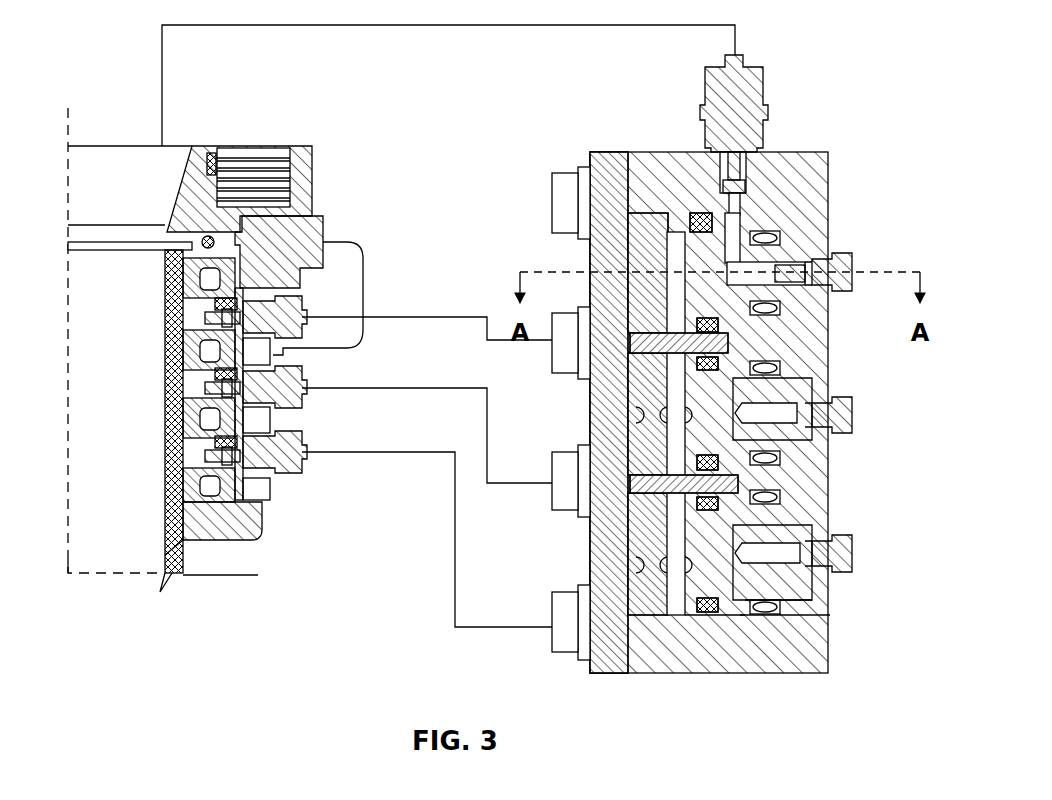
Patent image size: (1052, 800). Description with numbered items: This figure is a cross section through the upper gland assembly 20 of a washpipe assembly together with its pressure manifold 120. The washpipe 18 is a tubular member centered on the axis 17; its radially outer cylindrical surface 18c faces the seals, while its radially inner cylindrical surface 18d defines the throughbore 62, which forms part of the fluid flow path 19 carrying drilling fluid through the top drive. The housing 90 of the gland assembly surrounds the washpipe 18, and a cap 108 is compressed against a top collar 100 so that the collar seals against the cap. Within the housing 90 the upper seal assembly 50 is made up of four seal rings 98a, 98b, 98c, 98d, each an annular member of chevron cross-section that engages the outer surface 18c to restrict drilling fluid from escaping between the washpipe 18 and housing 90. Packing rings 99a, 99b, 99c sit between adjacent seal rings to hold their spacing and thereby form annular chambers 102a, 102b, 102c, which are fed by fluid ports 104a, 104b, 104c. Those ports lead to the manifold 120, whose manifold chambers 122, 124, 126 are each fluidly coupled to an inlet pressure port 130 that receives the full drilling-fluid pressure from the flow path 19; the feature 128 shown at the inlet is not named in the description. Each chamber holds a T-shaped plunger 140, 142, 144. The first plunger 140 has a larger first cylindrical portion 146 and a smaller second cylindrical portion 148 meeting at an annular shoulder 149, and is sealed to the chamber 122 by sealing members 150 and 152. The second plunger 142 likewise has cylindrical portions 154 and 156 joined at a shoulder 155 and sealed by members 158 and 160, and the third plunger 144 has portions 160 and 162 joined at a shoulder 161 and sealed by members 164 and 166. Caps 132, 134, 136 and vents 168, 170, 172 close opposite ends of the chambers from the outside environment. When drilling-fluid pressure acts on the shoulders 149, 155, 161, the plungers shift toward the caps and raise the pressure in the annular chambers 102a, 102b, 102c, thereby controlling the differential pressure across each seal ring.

The axis 17 is at (68, 410).
The washpipe 18 is at (100, 246).
The radially outer cylindrical surface 18c is at (185, 567).
The radially inner cylindrical surface 18d is at (166, 556).
The fluid flow path 19 is at (84, 186).
The upper gland assembly 20 is at (292, 492).
The upper seal assembly 50 is at (237, 494).
The throughbore 62 is at (88, 513).
The housing 90 is at (313, 160).
The first seal ring 98a is at (190, 283).
The second seal ring 98b is at (190, 352).
The third seal ring 98c is at (190, 420).
The fourth seal ring 98d is at (190, 490).
The first packing ring 99a is at (222, 302).
The second packing ring 99b is at (222, 372).
The third packing ring 99c is at (222, 441).
The top collar 100 is at (275, 235).
The first annular chamber 102a is at (218, 318).
The second annular chamber 102b is at (218, 388).
The third annular chamber 102c is at (218, 456).
The first fluid port 104a is at (303, 337).
The second fluid port 104b is at (300, 400).
The third fluid port 104c is at (303, 466).
The cap 108 is at (210, 158).
The pressure manifold 120 is at (830, 172).
The first chamber 122 is at (742, 223).
The second chamber 124 is at (668, 381).
The third chamber 126 is at (673, 564).
The bore 128 is at (720, 186).
The inlet pressure port 130 is at (768, 93).
The cap 132 is at (642, 248).
The cap 134 is at (647, 450).
The cap 136 is at (608, 561).
The first plunger 140 is at (663, 246).
The second plunger 142 is at (807, 389).
The third plunger 144 is at (807, 533).
The first cylindrical portion 146 is at (612, 172).
The second cylindrical portion 148 is at (807, 287).
The annular shoulder 149 is at (770, 316).
The first annular sealing member 150 is at (694, 323).
The second annular sealing member 152 is at (788, 241).
The first cylindrical portion 154 is at (650, 493).
The annular shoulder 155 is at (772, 470).
The second cylindrical portion 156 is at (800, 432).
The first annular sealing member 158 is at (688, 356).
The first cylindrical portion 160 is at (780, 368).
The annular shoulder 161 is at (745, 613).
The second cylindrical portion 162 is at (800, 583).
The first annular sealing member 164 is at (723, 614).
The second annular sealing member 166 is at (764, 613).
The vent 168 is at (853, 259).
The vent 170 is at (853, 424).
The vent 172 is at (853, 554).